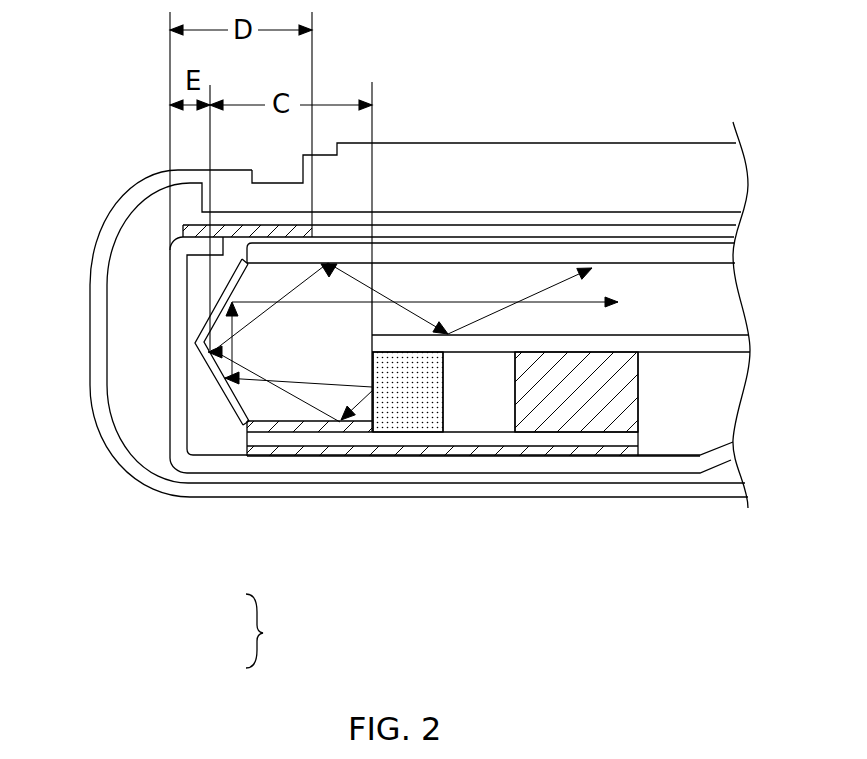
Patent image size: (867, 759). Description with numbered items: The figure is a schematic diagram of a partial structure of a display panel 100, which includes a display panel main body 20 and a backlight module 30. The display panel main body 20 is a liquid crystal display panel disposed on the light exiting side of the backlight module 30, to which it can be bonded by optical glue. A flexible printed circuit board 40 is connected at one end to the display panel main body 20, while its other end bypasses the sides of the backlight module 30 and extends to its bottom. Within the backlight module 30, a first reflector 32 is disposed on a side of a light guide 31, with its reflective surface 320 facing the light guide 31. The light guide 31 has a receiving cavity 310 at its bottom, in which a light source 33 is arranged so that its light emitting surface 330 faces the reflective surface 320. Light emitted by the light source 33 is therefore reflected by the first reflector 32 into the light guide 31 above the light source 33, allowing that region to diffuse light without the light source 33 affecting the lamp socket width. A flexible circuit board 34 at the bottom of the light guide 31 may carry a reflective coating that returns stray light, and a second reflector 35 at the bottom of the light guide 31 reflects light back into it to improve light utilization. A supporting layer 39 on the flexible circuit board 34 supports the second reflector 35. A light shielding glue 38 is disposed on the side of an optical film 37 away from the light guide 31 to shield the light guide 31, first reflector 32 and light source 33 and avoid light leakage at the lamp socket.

The display panel 100 is at (746, 59).
The display panel main body 20 is at (473, 135).
The backlight module 30 is at (257, 635).
The light guide 31 is at (697, 313).
The receiving cavity 310 is at (467, 407).
The first reflector 32 is at (229, 405).
The reflective surface 320 is at (237, 400).
The light source 33 is at (425, 418).
The light emitting surface 330 is at (375, 410).
The flexible circuit board 34 is at (176, 392).
The second reflector 35 is at (668, 342).
The optical film 37 is at (596, 253).
The light shielding glue 38 is at (246, 241).
The supporting layer 39 is at (557, 413).
The flexible printed circuit board 40 is at (106, 393).